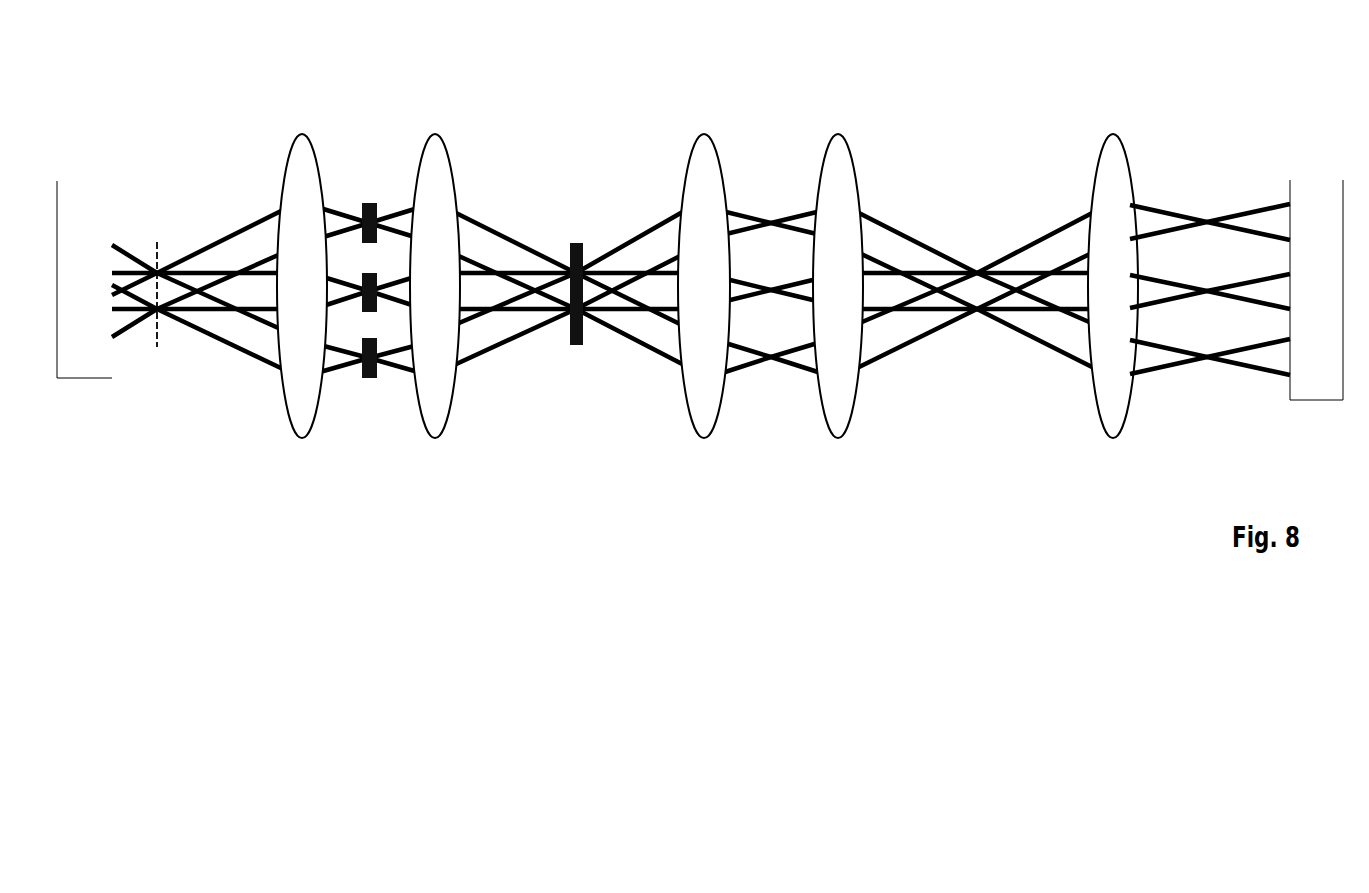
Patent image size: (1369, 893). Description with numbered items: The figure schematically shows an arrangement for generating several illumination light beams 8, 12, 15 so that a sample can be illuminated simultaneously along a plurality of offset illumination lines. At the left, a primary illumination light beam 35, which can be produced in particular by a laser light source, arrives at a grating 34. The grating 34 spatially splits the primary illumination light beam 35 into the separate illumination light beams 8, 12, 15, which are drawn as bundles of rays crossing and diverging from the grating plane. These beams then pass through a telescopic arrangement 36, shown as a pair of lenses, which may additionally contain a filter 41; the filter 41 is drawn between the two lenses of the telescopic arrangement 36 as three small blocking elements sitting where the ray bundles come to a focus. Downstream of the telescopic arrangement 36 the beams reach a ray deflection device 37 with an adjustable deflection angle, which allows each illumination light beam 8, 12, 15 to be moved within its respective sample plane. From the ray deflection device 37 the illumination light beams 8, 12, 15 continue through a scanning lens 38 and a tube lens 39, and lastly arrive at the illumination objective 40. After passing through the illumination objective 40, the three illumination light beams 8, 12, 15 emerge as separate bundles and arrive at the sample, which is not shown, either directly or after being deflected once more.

The illumination light beam 8 is at (1262, 226).
The illumination light beam 12 is at (1262, 295).
The illumination light beam 15 is at (1262, 362).
The grating 34 is at (157, 229).
The primary illumination light beam 35 is at (121, 300).
The telescopic arrangement 36 is at (435, 438).
The ray deflection device 37 is at (578, 182).
The scanning lens 38 is at (710, 158).
The tube lens 39 is at (847, 158).
The illumination objective 40 is at (1122, 158).
The filter 41 is at (366, 166).